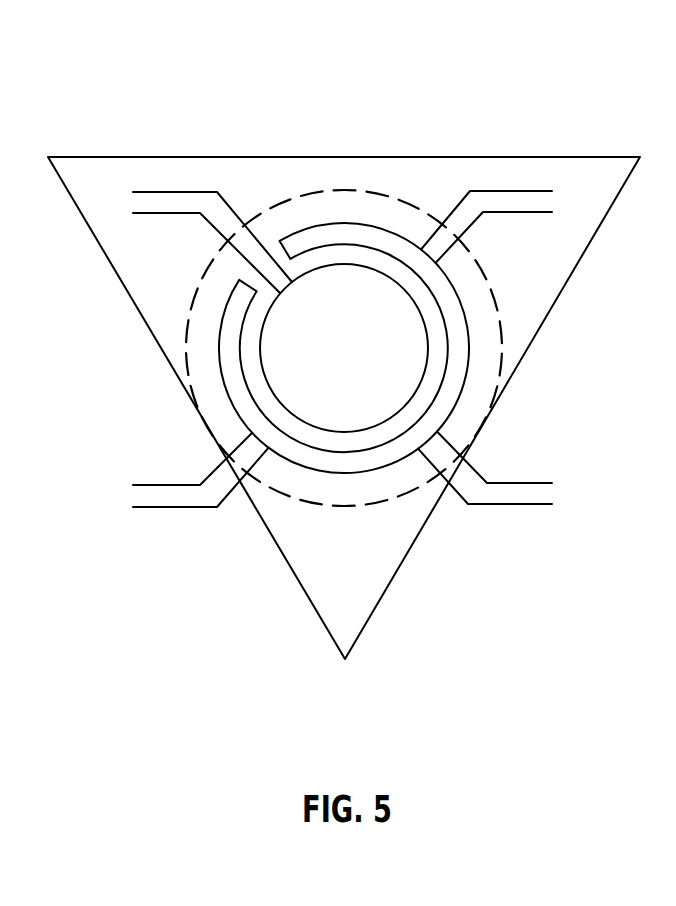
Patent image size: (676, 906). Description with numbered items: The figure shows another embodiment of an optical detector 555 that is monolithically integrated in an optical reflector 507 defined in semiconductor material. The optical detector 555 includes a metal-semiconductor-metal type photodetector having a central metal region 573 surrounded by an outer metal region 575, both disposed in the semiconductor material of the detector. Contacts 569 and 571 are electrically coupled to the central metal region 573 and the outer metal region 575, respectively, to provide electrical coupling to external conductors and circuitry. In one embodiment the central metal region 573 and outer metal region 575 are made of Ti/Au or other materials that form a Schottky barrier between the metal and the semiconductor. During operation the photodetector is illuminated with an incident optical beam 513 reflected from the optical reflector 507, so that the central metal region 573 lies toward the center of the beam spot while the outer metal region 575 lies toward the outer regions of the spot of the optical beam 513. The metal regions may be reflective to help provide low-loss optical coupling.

The optical detector 555 is at (493, 92).
The optical reflector 507 is at (102, 192).
The contact 569 is at (187, 192).
The contacts 571 is at (508, 191).
The optical beam 513 is at (193, 313).
The central metal region 573 is at (422, 318).
The outer metal region 575 is at (468, 338).